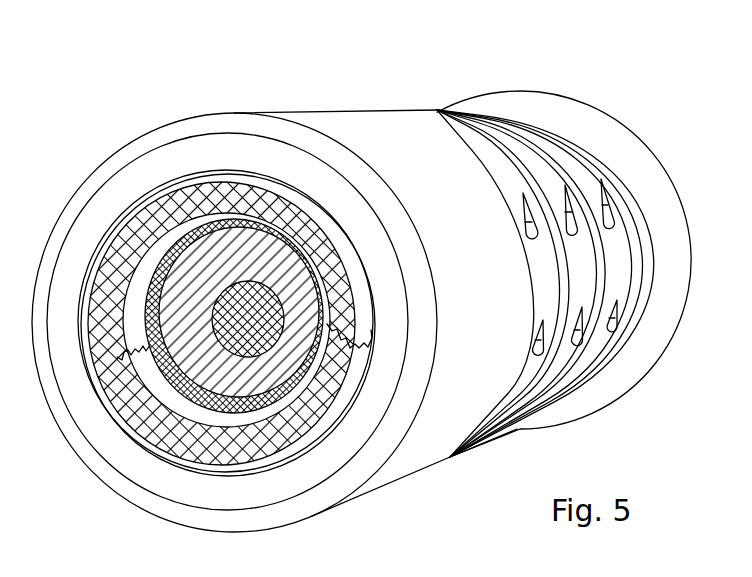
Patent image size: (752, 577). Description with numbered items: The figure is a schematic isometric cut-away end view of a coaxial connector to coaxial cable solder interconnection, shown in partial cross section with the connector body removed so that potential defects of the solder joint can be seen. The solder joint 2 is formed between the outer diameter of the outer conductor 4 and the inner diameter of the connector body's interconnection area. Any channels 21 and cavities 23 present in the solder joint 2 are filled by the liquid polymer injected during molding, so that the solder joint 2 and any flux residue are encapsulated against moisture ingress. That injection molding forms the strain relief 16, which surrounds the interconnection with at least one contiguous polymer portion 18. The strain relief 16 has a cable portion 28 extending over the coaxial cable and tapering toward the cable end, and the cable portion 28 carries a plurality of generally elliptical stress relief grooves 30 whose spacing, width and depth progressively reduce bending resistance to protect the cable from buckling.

The solder joint 2 is at (173, 213).
The outer conductor 4 is at (157, 283).
The strain relief 16 is at (370, 132).
The contiguous polymer portion 18 is at (227, 150).
The channels 21 is at (132, 358).
The cavities 23 is at (350, 357).
The cable portion 28 is at (495, 127).
The stress relief grooves 30 is at (580, 172).